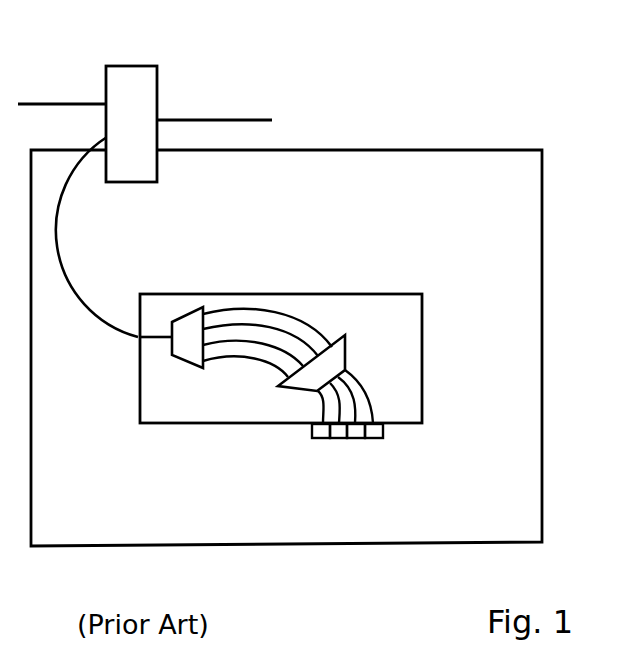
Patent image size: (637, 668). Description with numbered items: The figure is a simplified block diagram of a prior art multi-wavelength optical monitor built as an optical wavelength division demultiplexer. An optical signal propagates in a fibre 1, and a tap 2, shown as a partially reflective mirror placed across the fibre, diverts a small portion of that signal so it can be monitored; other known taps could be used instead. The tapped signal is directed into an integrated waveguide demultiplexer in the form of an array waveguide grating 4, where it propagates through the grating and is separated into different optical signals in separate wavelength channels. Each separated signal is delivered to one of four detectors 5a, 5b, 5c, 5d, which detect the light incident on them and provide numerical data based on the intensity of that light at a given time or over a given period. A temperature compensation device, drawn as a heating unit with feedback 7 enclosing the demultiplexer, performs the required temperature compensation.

The fibre 1 is at (37, 104).
The tap 2 is at (148, 66).
The array waveguide grating 4 is at (303, 318).
The detector 5a is at (317, 440).
The detector 5b is at (337, 440).
The detector 5c is at (355, 440).
The detector 5d is at (373, 440).
The heating unit with feedback 7 is at (498, 281).